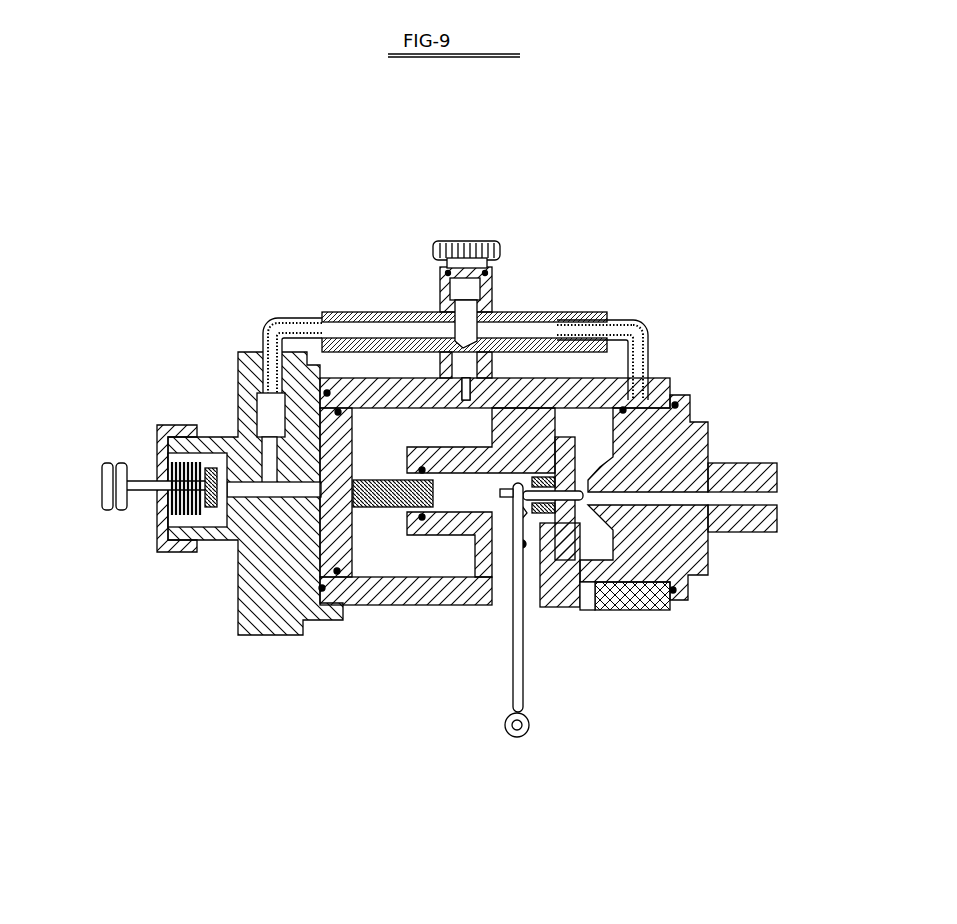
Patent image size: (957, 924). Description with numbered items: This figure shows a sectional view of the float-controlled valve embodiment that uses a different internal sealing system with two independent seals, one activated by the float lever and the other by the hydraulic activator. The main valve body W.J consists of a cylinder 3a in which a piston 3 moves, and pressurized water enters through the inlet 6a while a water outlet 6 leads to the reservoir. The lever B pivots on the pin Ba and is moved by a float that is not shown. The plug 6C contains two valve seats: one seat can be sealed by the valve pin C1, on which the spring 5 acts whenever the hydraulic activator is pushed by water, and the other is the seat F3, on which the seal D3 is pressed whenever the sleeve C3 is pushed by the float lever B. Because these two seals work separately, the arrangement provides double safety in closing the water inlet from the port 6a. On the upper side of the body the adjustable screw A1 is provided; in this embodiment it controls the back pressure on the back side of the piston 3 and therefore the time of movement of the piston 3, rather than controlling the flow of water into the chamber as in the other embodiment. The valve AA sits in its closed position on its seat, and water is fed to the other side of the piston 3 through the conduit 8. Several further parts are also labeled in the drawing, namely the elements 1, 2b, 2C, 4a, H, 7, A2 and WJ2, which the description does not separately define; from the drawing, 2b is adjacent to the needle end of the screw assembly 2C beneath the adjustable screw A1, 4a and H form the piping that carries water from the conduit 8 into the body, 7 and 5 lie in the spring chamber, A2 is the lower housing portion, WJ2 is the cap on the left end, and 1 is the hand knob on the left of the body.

The adjusting knob 1 is at (103, 511).
The cylinder 3a is at (240, 353).
The piston 3 is at (300, 352).
The needle valve 2b is at (457, 346).
The adjustable screw A1 is at (460, 239).
The valve stem 2C is at (492, 277).
The conduit 8 is at (470, 388).
The pipe 4a is at (623, 320).
The pipe elbow H is at (641, 367).
The valve pin C1 is at (587, 474).
The inlet 6a is at (735, 490).
The plug 6C is at (746, 522).
The seat F3 is at (708, 577).
The seal D3 is at (618, 605).
The sleeve C3 is at (623, 584).
The water outlet 6 is at (583, 604).
The pin Ba is at (523, 546).
The lever B is at (524, 701).
The spring 5 is at (379, 514).
The spring seat 7 is at (398, 518).
The valve body W.J is at (449, 608).
The housing A2 is at (338, 614).
The water jacket cap WJ2 is at (238, 541).
The valve AA is at (210, 505).